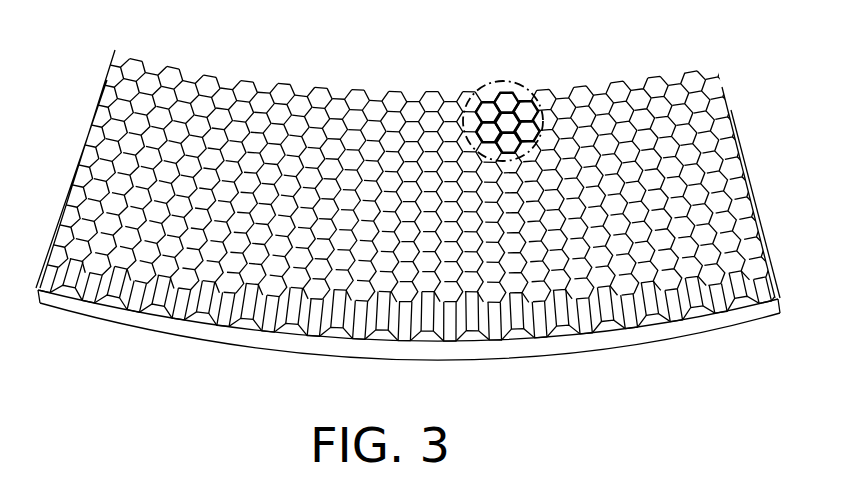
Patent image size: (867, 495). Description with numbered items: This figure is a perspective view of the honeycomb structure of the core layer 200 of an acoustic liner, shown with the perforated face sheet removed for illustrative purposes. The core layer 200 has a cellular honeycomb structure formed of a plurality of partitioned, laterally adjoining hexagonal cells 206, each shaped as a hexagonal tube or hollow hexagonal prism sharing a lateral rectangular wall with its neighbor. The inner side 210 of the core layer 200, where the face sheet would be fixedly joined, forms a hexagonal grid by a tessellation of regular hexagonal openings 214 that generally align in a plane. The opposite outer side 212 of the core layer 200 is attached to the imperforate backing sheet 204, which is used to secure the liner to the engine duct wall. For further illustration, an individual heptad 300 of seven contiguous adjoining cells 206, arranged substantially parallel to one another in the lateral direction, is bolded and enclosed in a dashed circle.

The core layer 200 is at (433, 191).
The backing sheet 204 is at (38, 291).
The hexagonal cells 206 is at (691, 70).
The inner side 210 is at (742, 192).
The outer side 212 is at (658, 326).
The regular hexagonal openings 214 is at (749, 187).
The heptad 300 is at (498, 83).